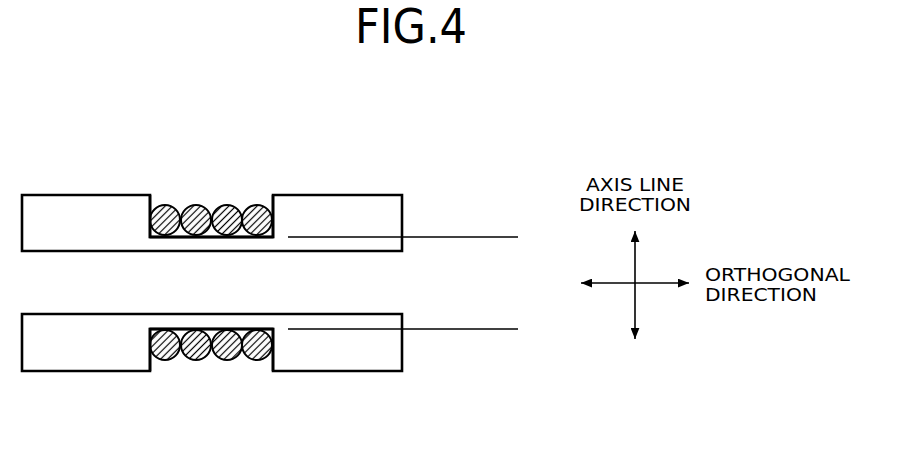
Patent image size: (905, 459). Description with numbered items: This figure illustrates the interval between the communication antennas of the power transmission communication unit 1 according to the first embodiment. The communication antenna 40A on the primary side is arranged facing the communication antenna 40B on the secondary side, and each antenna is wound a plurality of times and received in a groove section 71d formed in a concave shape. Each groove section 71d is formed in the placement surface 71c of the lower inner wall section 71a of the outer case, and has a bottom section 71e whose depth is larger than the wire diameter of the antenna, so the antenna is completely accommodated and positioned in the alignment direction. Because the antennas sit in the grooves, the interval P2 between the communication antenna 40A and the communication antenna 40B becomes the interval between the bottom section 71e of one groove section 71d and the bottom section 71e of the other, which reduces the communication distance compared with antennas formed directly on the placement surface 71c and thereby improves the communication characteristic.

The power transmission communication unit 1 is at (216, 140).
The lower inner wall section 71a is at (232, 284).
The placement surface 71c is at (372, 194).
The groove section 71d is at (195, 196).
The bottom section 71e is at (198, 328).
The communication antenna on the primary side 40A is at (208, 202).
The communication antenna on the secondary side 40B is at (211, 362).
The interval P2 is at (482, 248).